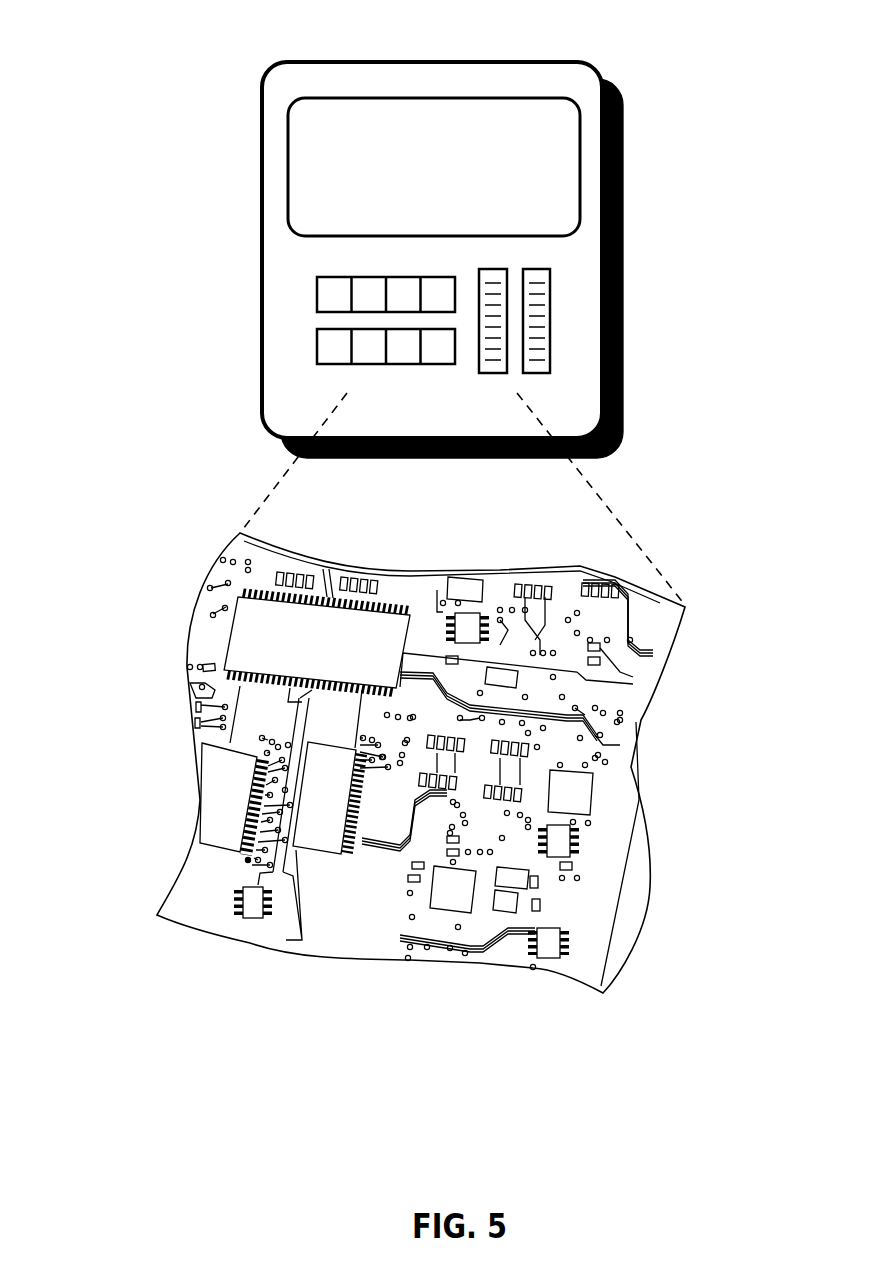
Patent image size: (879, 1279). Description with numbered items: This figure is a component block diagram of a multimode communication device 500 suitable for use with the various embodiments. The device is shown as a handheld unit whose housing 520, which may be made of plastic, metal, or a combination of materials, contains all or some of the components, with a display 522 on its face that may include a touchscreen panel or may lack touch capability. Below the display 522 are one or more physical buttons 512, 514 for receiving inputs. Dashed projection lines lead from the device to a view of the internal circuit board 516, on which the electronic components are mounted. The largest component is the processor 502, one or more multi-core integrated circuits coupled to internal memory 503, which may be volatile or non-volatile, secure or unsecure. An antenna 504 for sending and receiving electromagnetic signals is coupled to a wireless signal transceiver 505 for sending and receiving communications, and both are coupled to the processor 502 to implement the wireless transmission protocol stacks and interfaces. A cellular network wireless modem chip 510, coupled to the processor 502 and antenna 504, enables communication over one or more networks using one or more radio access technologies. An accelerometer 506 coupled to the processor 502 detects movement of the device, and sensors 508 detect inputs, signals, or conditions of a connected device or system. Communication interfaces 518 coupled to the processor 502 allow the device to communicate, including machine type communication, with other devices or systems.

The multimode communication device 500 is at (422, 231).
The processor 502 is at (317, 643).
The internal memory 503 is at (327, 798).
The antenna 504 is at (466, 577).
The wireless signal transceiver 505 is at (482, 613).
The accelerometer 506 is at (570, 843).
The sensors 508 is at (575, 938).
The cellular network wireless modem chip 510 is at (593, 790).
The physical buttons 512 is at (317, 338).
The physical buttons 514 is at (550, 305).
The printed circuit board 516 is at (436, 758).
The communication interfaces 518 is at (247, 918).
The housing 520 is at (623, 408).
The display 522 is at (308, 157).